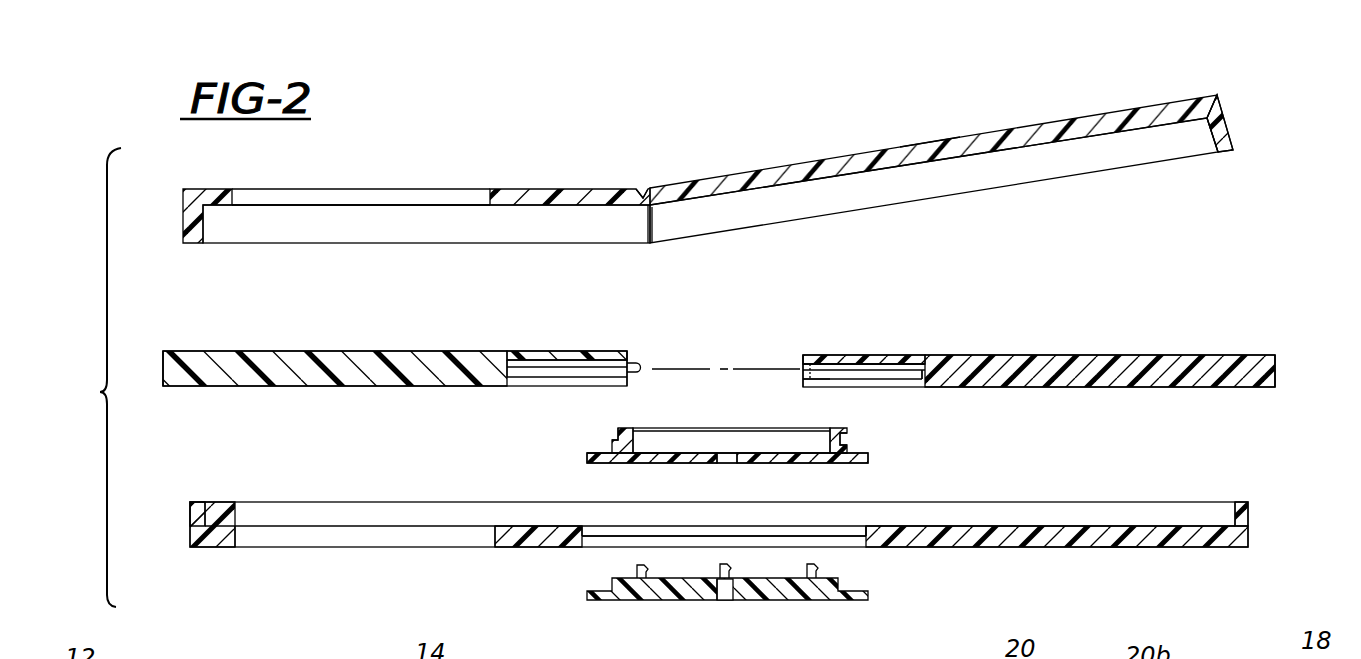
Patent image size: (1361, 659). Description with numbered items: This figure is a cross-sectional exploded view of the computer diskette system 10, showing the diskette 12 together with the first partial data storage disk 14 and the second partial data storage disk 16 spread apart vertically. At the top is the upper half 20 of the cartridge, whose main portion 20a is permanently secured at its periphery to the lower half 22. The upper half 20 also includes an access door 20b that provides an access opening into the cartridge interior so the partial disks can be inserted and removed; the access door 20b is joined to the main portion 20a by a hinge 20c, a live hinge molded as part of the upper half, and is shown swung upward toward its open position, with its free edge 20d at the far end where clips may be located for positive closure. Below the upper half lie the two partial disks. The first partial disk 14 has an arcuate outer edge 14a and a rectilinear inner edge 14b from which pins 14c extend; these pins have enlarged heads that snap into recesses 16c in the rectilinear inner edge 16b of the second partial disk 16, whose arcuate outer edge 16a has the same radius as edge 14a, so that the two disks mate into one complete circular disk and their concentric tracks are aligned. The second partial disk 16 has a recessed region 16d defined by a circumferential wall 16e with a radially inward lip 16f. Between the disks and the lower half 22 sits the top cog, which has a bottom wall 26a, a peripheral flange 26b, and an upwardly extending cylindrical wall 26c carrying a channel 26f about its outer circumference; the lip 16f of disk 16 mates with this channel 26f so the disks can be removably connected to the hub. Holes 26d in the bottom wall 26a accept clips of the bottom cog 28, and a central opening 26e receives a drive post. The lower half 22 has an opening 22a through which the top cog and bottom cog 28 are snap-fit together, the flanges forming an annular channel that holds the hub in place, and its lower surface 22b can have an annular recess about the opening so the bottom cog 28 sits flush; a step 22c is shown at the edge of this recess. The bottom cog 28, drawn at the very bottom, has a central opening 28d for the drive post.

The computer diskette system 10 is at (83, 377).
The diskette 12 is at (420, 155).
The upper half 20 is at (1054, 100).
The main portion 20a is at (518, 189).
The access door 20b is at (930, 140).
The hinge 20c is at (643, 196).
The free edge 20d is at (1235, 122).
The first partial data storage disk 14 is at (343, 330).
The arcuate outer edge 14a is at (163, 351).
The rectilinear inner edge 14b is at (628, 353).
The pins 14c is at (642, 368).
The second partial data storage disk 16 is at (1090, 340).
The arcuate outer edge 16a is at (1277, 366).
The rectilinear inner edge 16b is at (805, 356).
The recesses 16c is at (812, 364).
The recessed region 16d is at (895, 362).
The circumferential wall 16e is at (800, 378).
The lip 16f is at (923, 381).
The bottom wall 26a is at (650, 428).
The peripheral flange 26b is at (587, 458).
The cylindrical wall 26c is at (852, 437).
The holes 26d is at (645, 463).
The opening 26e is at (730, 463).
The channel 26f is at (612, 440).
The lower half 22 is at (1274, 503).
The opening 22a is at (840, 525).
The lower surface 22b is at (1125, 547).
The recess shoulder 22c is at (866, 547).
The bottom cog 28 is at (842, 612).
The opening 28d is at (730, 600).